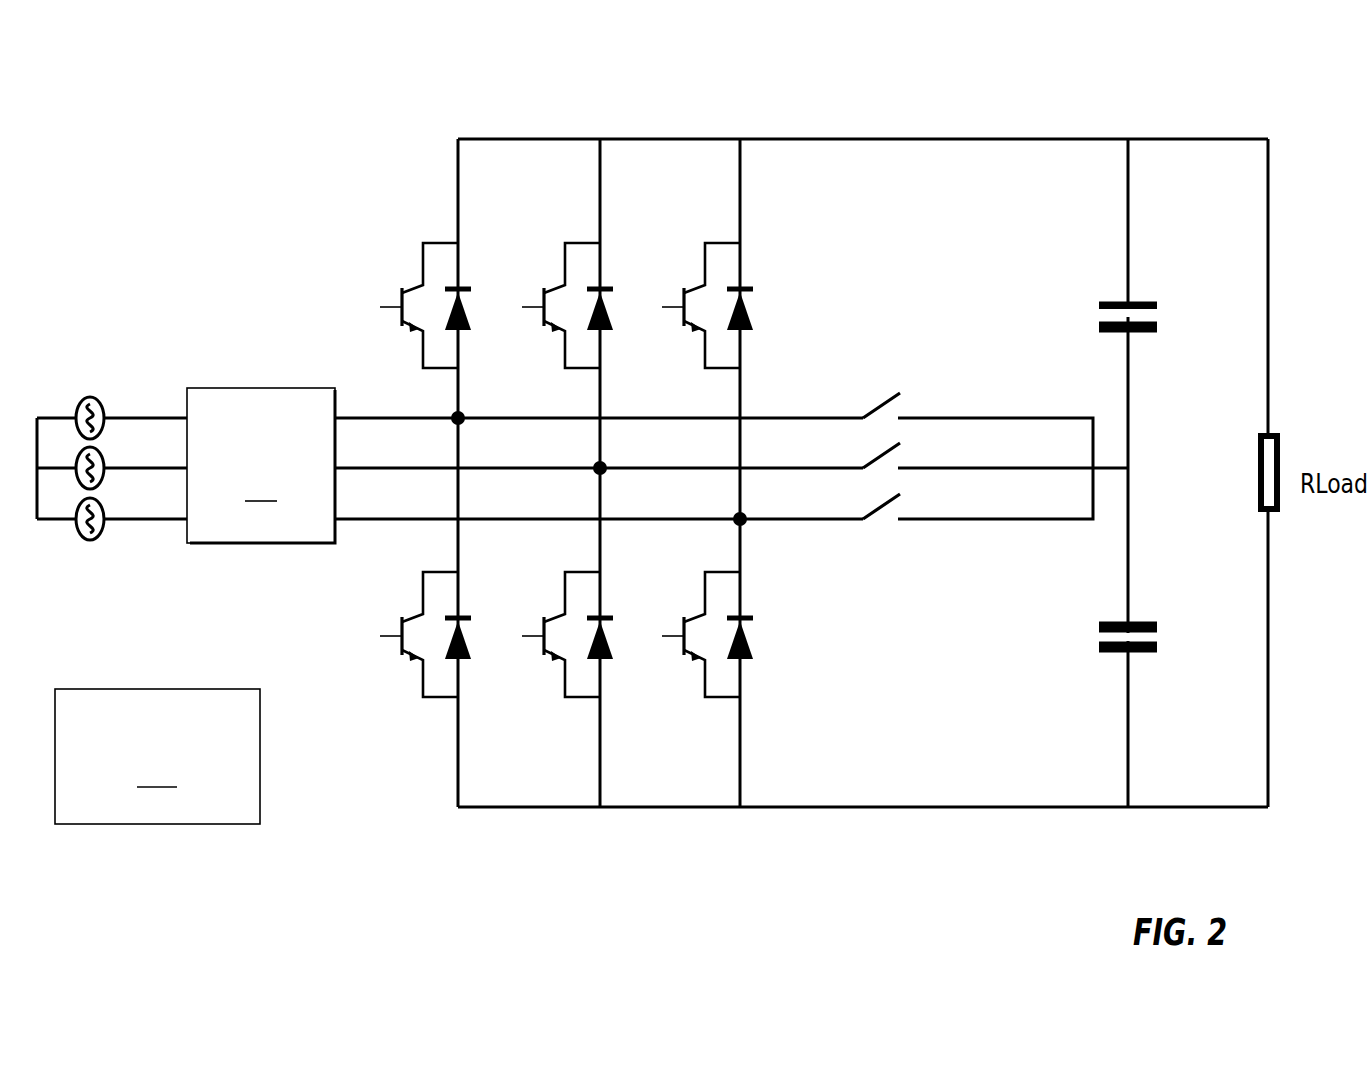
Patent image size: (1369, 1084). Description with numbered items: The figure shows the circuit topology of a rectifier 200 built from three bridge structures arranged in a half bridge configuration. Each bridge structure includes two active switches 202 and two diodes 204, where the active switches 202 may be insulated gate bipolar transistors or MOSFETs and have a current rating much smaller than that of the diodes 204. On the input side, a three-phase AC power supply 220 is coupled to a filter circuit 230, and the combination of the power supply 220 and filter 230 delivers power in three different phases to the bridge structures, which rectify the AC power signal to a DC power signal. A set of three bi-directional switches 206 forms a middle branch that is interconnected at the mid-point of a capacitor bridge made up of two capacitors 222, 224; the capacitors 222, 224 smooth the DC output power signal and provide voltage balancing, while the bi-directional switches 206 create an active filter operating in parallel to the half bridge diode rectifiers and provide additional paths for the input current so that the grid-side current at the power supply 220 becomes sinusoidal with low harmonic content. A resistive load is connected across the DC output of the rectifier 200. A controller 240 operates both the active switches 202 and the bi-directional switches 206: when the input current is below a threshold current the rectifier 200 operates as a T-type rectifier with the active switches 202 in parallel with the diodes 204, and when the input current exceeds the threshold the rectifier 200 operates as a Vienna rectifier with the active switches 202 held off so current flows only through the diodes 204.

The rectifier 200 is at (250, 102).
The active switches 202 is at (425, 243).
The diodes 204 is at (745, 298).
The bi-directional switches 206 is at (880, 503).
The three-phase AC power supply 220 is at (87, 397).
The capacitor 222 is at (1100, 303).
The capacitor 224 is at (1108, 640).
The filter circuit 230 is at (261, 465).
The controller 240 is at (157, 756).